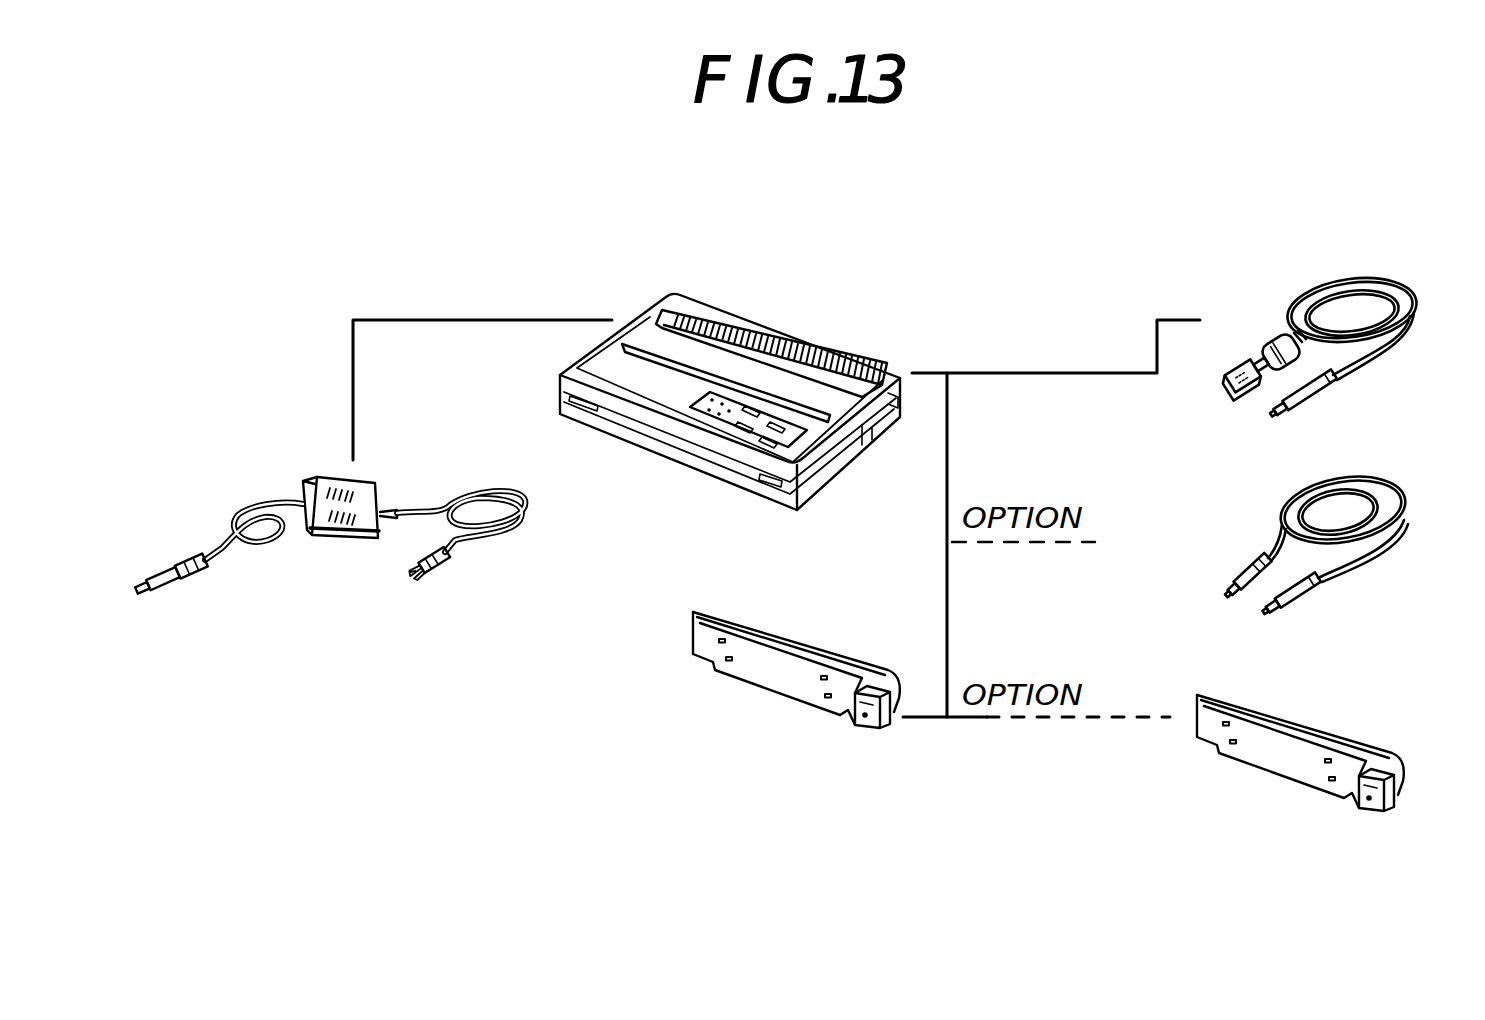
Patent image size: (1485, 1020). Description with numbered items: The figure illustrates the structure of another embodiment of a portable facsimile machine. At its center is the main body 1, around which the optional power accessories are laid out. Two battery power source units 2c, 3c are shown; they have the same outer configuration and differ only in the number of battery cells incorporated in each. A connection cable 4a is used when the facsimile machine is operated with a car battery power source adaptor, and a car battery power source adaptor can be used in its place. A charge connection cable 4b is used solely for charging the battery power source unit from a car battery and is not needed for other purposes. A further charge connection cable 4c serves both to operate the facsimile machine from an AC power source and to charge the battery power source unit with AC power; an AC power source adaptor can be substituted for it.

The main body 1 is at (767, 330).
The battery power source unit 2c is at (790, 648).
The battery power source unit 3c is at (1315, 741).
The connection cable 4a is at (1365, 282).
The charge connection cable 4b is at (1368, 481).
The charge connection cable 4c is at (348, 541).